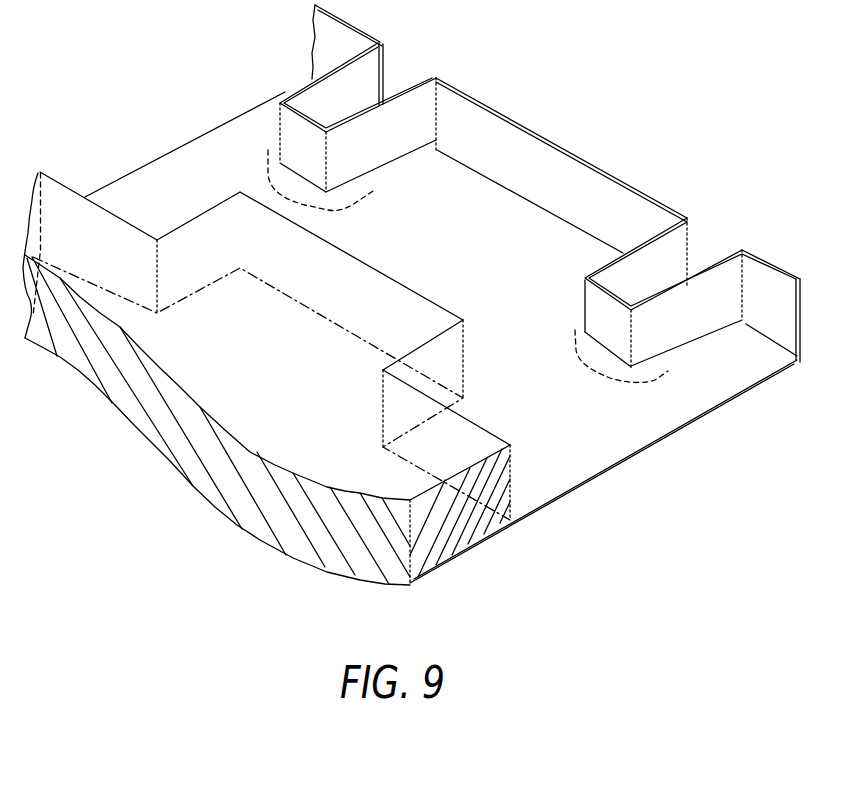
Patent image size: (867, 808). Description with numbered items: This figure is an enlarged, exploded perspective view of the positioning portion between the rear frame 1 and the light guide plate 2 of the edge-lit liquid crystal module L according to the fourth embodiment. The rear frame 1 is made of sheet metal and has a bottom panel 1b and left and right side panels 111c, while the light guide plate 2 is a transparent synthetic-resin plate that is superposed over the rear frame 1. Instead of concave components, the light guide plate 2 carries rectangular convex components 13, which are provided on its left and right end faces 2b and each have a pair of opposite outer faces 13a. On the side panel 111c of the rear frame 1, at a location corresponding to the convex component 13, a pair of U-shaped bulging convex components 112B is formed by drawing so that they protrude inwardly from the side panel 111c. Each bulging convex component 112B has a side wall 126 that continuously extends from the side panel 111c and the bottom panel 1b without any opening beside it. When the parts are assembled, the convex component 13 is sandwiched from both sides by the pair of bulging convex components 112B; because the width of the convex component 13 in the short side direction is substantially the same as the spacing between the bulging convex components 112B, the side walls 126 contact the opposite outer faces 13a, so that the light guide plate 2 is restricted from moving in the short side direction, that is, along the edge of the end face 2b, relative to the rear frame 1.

The rear frame 1 is at (441, 337).
The bottom panel 1b is at (617, 442).
The light guide plate 2 is at (450, 458).
The end face 2b is at (498, 428).
The convex component 13 is at (358, 275).
The outer face 13a is at (192, 207).
The side panel 111c is at (565, 143).
The bulging convex component 112B is at (302, 82).
The side wall 126 is at (380, 138).
The liquid crystal module L is at (652, 127).